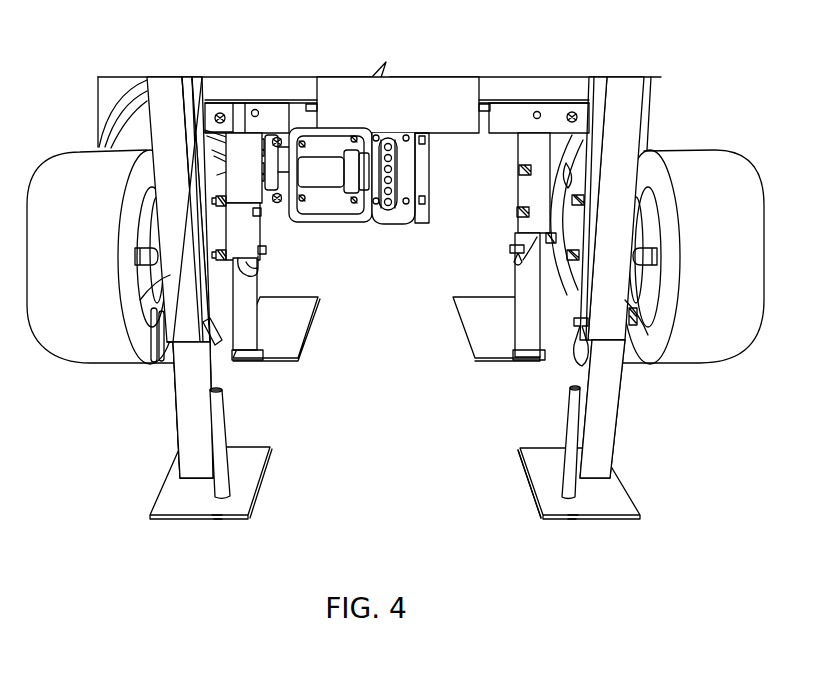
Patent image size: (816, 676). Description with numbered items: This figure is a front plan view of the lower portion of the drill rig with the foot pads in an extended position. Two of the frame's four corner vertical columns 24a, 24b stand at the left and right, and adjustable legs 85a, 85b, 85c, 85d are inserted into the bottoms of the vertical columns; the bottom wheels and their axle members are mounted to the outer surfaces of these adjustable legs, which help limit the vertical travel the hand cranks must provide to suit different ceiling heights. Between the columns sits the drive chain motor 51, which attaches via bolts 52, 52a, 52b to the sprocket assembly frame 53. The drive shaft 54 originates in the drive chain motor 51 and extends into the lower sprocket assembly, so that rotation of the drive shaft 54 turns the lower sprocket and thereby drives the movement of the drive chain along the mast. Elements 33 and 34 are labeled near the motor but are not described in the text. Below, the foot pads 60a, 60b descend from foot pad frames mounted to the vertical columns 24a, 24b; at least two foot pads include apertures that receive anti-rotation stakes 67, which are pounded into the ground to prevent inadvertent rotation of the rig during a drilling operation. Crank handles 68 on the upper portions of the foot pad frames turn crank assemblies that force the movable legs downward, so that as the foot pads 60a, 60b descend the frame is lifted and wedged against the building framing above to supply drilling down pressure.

The vertical column 24a is at (157, 110).
The vertical column 24b is at (641, 110).
The hydraulic hose fittings 33 is at (268, 150).
The mounting bracket 34 is at (247, 176).
The drive chain motor 51 is at (233, 127).
The bolts 52 is at (347, 217).
The bolt 52a is at (277, 205).
The bolt 52b is at (275, 135).
The sprocket assembly frame 53 is at (333, 217).
The drive shaft 54 is at (325, 163).
The foot pad 60a is at (233, 502).
The foot pad 60b is at (613, 493).
The anti-rotation stake 67 is at (218, 418).
The crank handle 68 is at (218, 503).
The adjustable leg 85a is at (153, 362).
The adjustable leg 85b is at (648, 355).
The adjustable leg 85c is at (250, 268).
The adjustable leg 85d is at (518, 253).